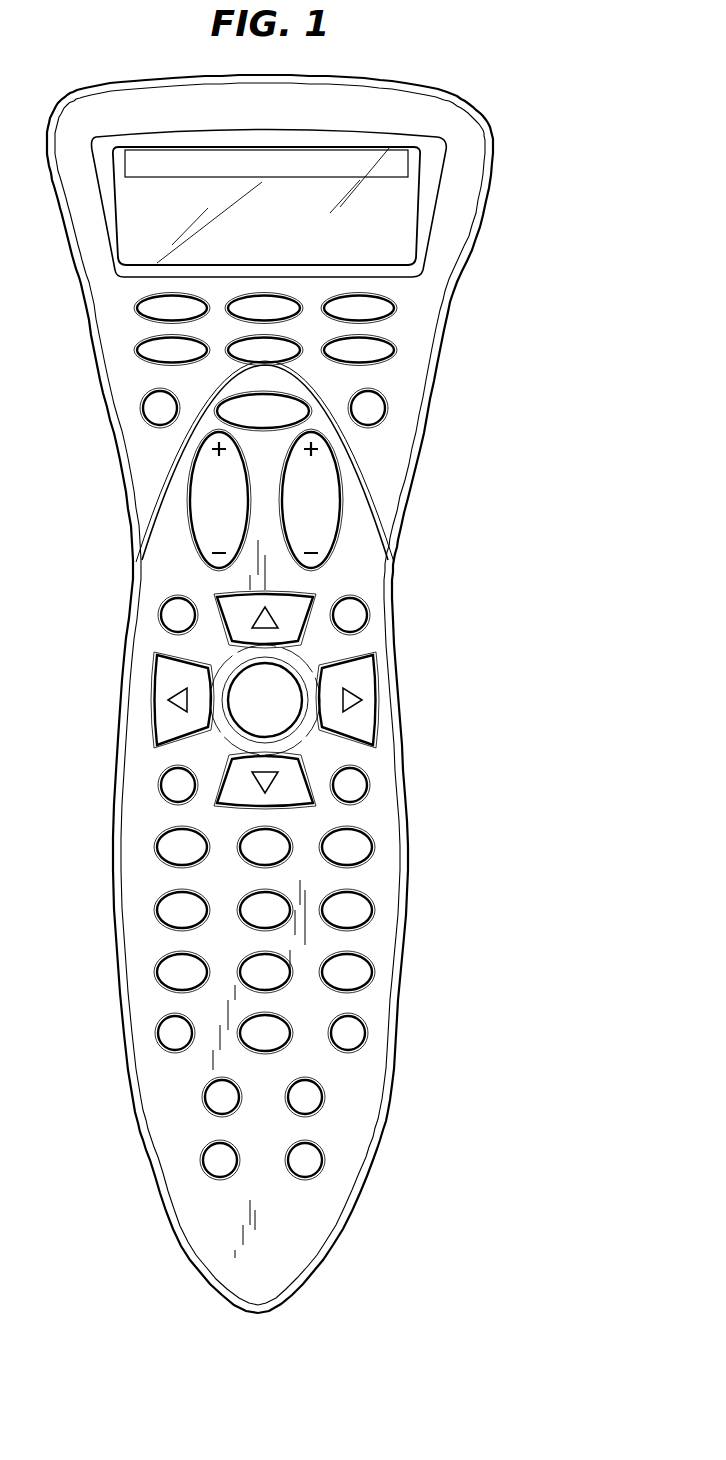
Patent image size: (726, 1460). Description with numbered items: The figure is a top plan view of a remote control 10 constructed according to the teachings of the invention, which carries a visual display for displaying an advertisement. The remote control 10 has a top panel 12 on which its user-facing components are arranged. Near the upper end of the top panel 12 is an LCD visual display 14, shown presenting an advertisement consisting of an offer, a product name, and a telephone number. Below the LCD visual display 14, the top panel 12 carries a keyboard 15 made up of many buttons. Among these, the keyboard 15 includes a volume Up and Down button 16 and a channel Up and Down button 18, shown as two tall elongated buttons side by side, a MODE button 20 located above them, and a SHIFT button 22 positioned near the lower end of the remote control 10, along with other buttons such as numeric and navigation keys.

The remote control 10 is at (318, 694).
The top panel 12 is at (417, 320).
The LCD visual display 14 is at (402, 218).
The keyboard 15 is at (382, 756).
The volume Up and Down button 16 is at (207, 488).
The channel Up and Down button 18 is at (313, 477).
The MODE button 20 is at (228, 421).
The SHIFT button 22 is at (210, 1157).